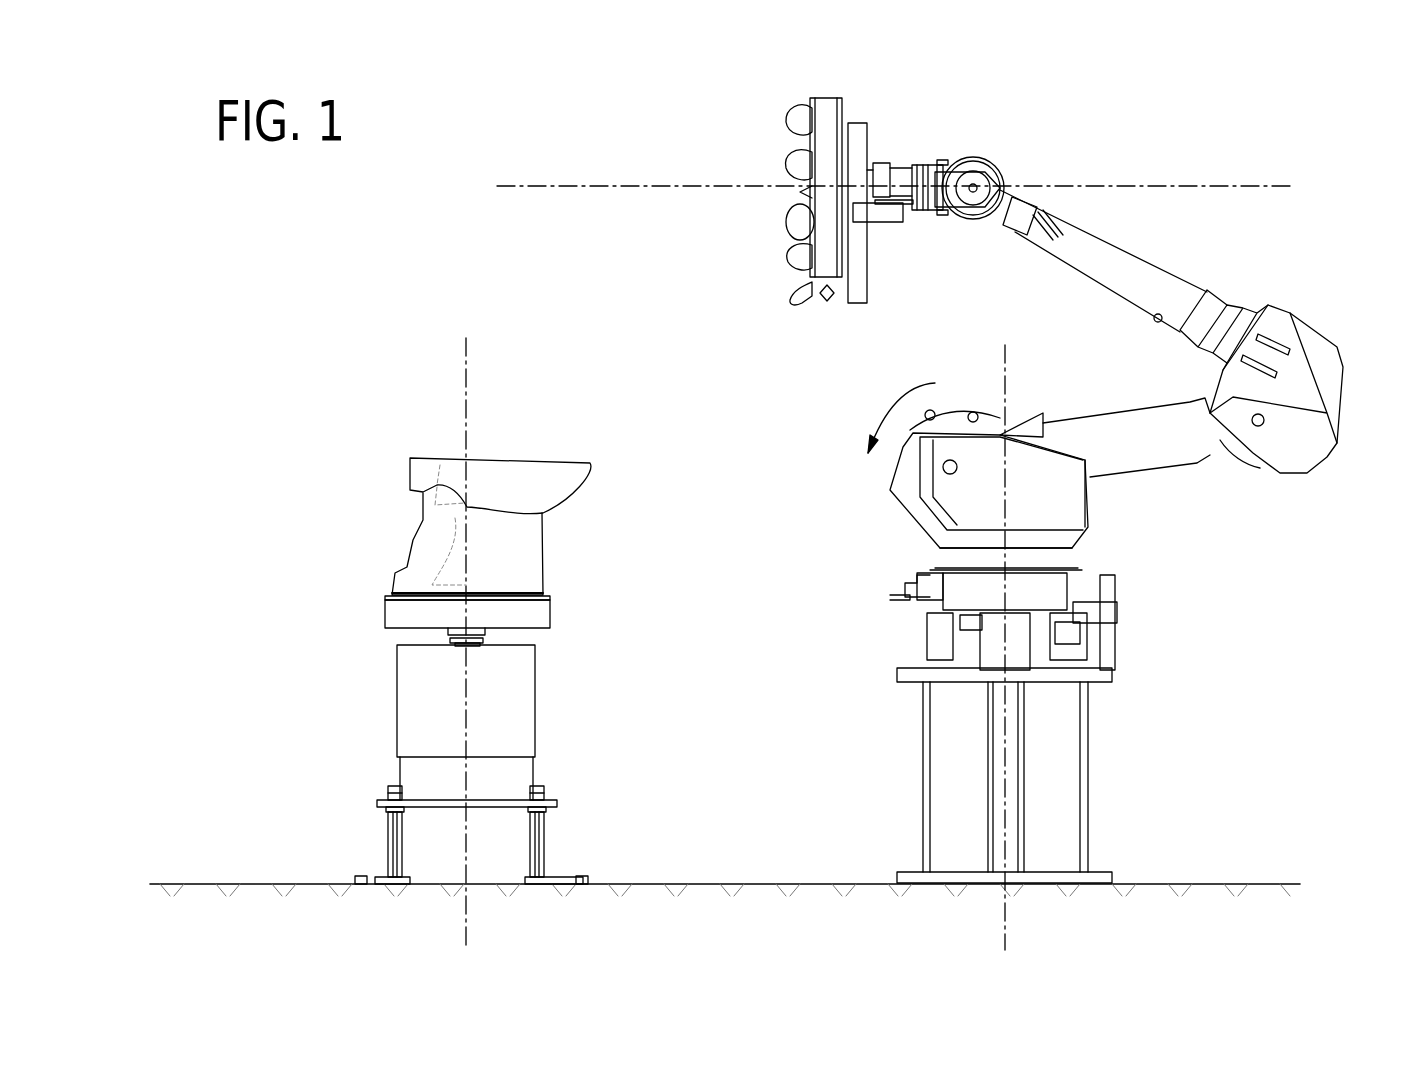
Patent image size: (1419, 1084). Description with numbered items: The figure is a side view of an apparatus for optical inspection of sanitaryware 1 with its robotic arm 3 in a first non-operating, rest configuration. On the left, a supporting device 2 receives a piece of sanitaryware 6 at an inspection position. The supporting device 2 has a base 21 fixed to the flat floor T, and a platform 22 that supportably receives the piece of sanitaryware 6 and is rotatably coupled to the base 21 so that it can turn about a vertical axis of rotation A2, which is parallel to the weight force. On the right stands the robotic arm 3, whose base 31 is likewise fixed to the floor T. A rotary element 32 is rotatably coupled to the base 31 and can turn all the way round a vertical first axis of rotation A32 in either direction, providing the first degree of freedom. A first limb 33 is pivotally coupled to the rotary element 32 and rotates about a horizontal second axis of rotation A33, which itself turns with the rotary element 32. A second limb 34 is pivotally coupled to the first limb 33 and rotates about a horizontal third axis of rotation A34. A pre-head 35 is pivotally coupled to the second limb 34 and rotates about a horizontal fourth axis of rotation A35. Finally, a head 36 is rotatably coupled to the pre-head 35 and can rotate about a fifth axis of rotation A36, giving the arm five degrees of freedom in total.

The apparatus for optical inspection of sanitaryware 1 is at (632, 142).
The supporting device 2 is at (451, 633).
The robotic arm 3 is at (1096, 469).
The piece of sanitaryware 6 is at (533, 480).
The base 21 is at (512, 688).
The platform 22 is at (530, 612).
The base 31 is at (1100, 672).
The rotary element 32 is at (1060, 500).
The first limb 33 is at (1130, 430).
The second limb 34 is at (1140, 280).
The pre-head 35 is at (900, 177).
The head 36 is at (857, 133).
The axis of rotation A2 is at (460, 410).
The first axis of rotation A32 is at (1003, 773).
The second axis of rotation A33 is at (948, 475).
The third axis of rotation A34 is at (1263, 432).
The fourth axis of rotation A35 is at (978, 220).
The fifth axis of rotation A36 is at (1113, 178).
The floor T is at (182, 884).